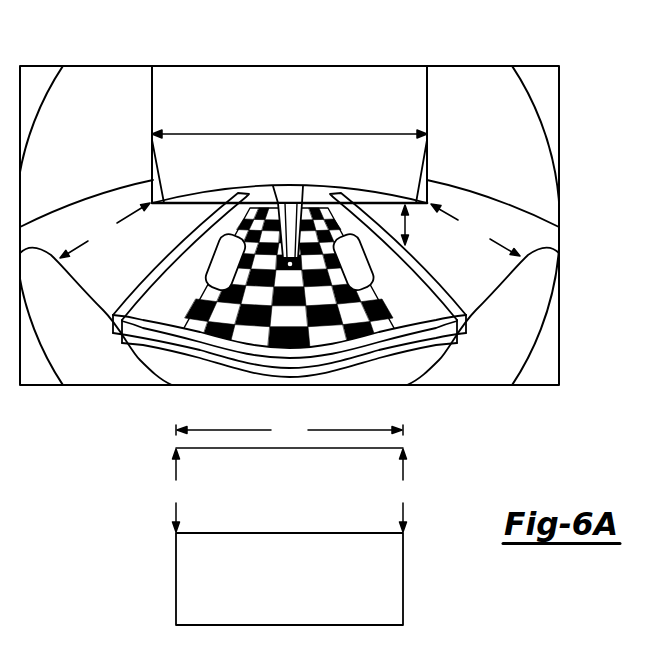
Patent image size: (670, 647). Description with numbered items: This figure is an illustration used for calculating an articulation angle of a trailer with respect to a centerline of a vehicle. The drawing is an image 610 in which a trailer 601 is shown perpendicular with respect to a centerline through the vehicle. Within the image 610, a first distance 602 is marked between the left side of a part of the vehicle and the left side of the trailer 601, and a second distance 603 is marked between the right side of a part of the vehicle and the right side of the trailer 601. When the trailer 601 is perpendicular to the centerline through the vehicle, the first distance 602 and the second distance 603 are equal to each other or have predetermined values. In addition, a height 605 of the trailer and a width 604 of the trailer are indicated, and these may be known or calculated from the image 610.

The image 610 is at (478, 66).
The trailer 601 is at (151, 113).
The first distance 602 is at (455, 368).
The second distance 603 is at (126, 367).
The width 604 is at (289, 431).
The height 605 is at (409, 228).